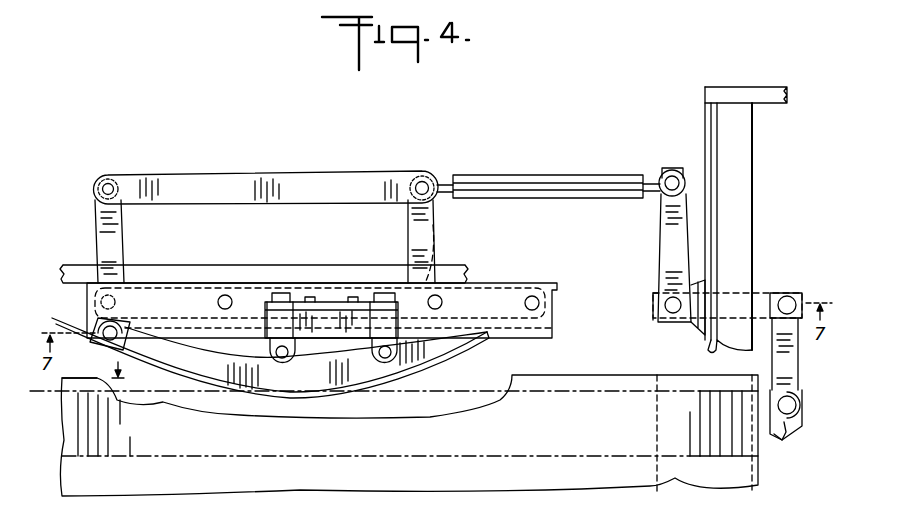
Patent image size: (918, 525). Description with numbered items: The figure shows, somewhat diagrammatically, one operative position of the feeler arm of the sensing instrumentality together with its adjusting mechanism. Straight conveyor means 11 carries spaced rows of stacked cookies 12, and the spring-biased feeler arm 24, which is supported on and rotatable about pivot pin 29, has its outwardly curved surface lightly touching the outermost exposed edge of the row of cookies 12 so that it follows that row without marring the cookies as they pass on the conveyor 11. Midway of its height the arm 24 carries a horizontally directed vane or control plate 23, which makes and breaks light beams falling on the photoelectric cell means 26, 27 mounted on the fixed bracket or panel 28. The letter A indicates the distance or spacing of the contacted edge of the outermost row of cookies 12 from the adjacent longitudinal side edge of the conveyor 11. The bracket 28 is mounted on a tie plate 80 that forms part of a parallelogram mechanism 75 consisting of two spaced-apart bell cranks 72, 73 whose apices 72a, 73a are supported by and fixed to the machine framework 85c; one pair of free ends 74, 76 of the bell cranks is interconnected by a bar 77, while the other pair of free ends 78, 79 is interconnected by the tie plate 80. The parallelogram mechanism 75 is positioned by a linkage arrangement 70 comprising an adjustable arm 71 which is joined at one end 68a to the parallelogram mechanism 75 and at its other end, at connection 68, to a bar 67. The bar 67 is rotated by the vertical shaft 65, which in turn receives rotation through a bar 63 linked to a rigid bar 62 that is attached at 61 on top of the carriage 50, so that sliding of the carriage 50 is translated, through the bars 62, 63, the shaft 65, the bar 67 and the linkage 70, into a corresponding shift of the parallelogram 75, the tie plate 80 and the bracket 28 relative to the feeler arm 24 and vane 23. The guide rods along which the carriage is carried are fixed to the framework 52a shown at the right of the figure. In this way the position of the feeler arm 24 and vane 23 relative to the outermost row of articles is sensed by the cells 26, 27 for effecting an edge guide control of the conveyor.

The free end of bell crank 74 is at (112, 182).
The parallelogram mechanism 75 is at (252, 172).
The bar 77 is at (292, 170).
The free end of bell crank 76 is at (431, 174).
The end of adjustable arm 68a is at (438, 176).
The adjustable arm 71 is at (530, 172).
The linkage arrangement 70 is at (577, 172).
The connection 68 is at (673, 170).
The framework 52a is at (710, 140).
The bell crank 72 is at (125, 250).
The apex of bell crank 72a is at (152, 283).
The framework 85c is at (226, 270).
The free end of bell crank 78 is at (257, 283).
The fixed bracket 28 is at (336, 296).
The bell crank 73 is at (406, 228).
The apex of bell crank 73a is at (437, 262).
The free end of bell crank 79 is at (540, 286).
The tie plate 80 is at (566, 283).
The bar 67 is at (659, 226).
The vertical shaft 65 is at (664, 305).
The bar 63 is at (770, 293).
The rigid bar 62 is at (793, 386).
The attachment point 61 is at (796, 404).
The carriage 50 is at (781, 438).
The pivot pin 29 is at (127, 328).
The straight conveyor means 11 is at (82, 358).
The stacked cookies 12 is at (80, 430).
The vane 23 is at (216, 384).
The feeler arm 24 is at (290, 400).
The photoelectric cell means 26 is at (300, 348).
The photoelectric cell means 27 is at (365, 388).
The distance A is at (130, 378).